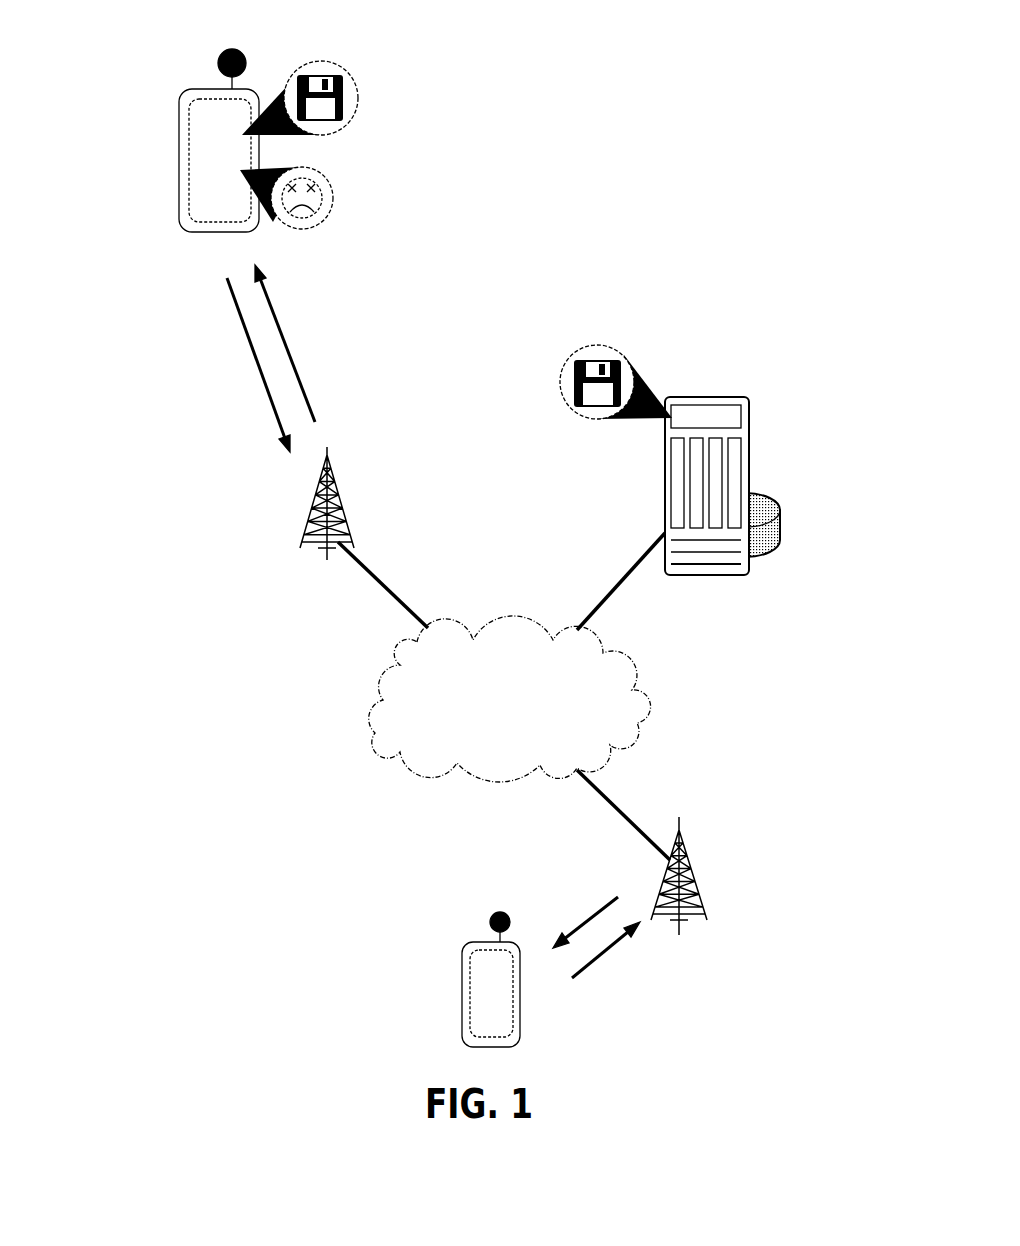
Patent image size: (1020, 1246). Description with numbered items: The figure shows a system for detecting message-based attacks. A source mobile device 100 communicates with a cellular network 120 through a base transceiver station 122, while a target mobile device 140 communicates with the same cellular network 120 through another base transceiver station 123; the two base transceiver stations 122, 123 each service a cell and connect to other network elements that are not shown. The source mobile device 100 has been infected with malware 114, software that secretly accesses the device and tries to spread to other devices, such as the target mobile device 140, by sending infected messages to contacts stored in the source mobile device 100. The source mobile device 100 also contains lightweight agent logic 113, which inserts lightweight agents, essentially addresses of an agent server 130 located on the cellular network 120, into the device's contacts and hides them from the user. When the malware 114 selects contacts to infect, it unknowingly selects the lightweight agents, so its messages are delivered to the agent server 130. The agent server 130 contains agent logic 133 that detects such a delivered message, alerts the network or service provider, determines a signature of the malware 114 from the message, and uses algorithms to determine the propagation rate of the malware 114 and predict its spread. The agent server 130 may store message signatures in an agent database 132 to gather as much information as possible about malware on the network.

The source mobile device 100 is at (207, 90).
The lightweight agent logic 113 is at (364, 80).
The malware 114 is at (352, 187).
The cellular network 120 is at (459, 720).
The base transceiver station 122 is at (389, 503).
The base transceiver station 123 is at (738, 867).
The agent server 130 is at (766, 460).
The agent database 132 is at (808, 504).
The agent logic 133 is at (559, 363).
The target mobile device 140 is at (424, 974).